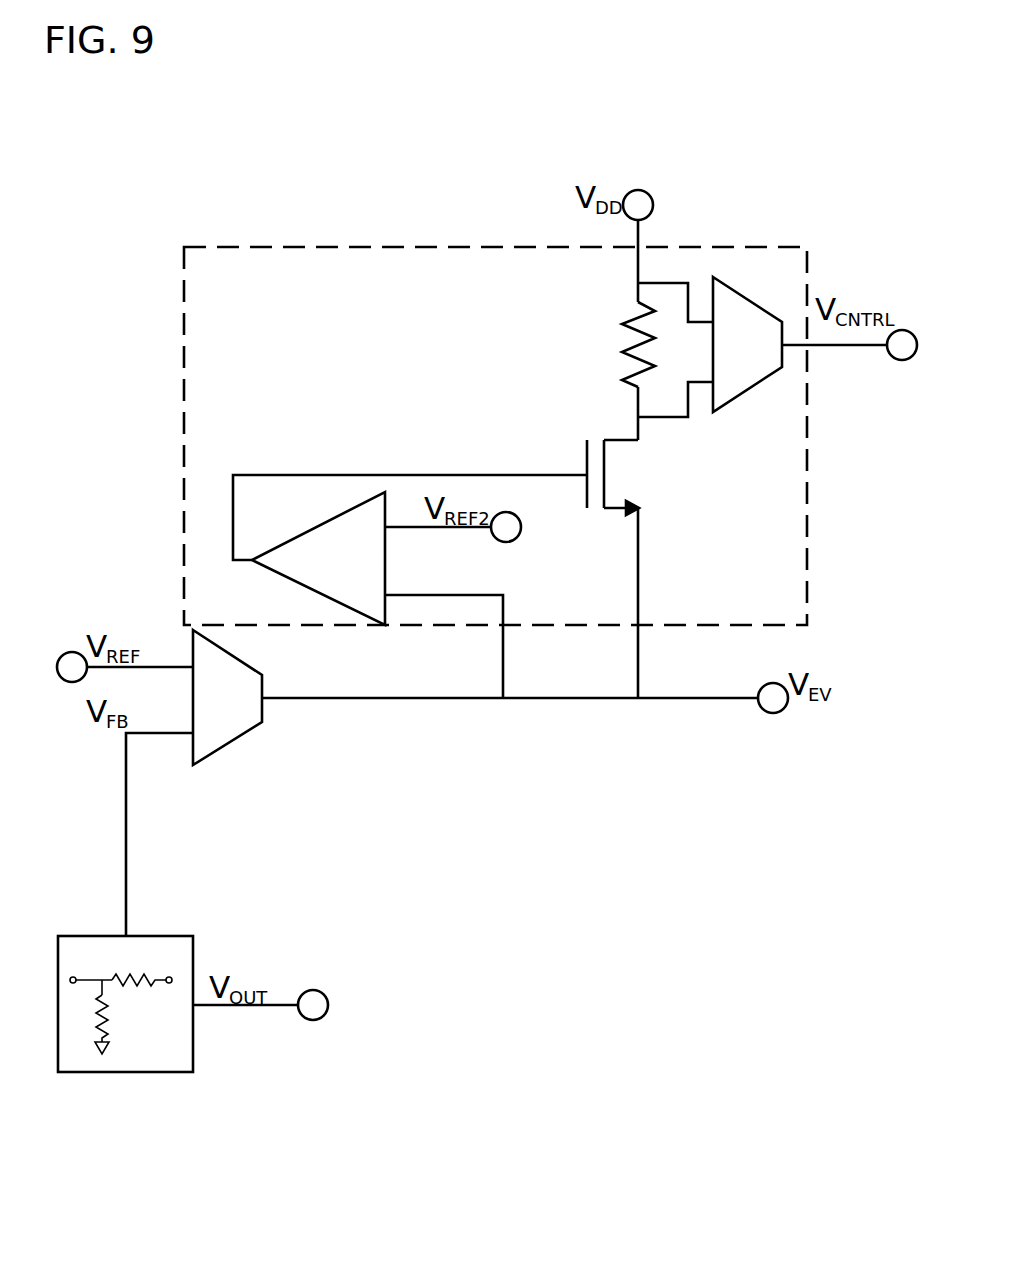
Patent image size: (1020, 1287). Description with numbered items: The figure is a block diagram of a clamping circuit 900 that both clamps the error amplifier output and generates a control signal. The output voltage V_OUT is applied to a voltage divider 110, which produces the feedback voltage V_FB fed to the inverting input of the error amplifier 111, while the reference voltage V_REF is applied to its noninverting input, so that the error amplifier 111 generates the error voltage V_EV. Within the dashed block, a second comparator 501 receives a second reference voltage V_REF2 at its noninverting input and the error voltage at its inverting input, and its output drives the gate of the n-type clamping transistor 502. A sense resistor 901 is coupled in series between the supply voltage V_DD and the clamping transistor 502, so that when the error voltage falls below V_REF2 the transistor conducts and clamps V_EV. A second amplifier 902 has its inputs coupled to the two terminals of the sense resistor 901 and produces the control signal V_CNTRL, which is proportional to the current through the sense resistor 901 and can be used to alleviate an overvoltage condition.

The clamping circuit 900 is at (292, 346).
The sense resistor 901 is at (603, 340).
The second amplifier 902 is at (724, 359).
The clamping transistor 502 is at (640, 475).
The second comparator 501 is at (298, 574).
The error amplifier 111 is at (249, 714).
The voltage divider 110 is at (184, 1059).